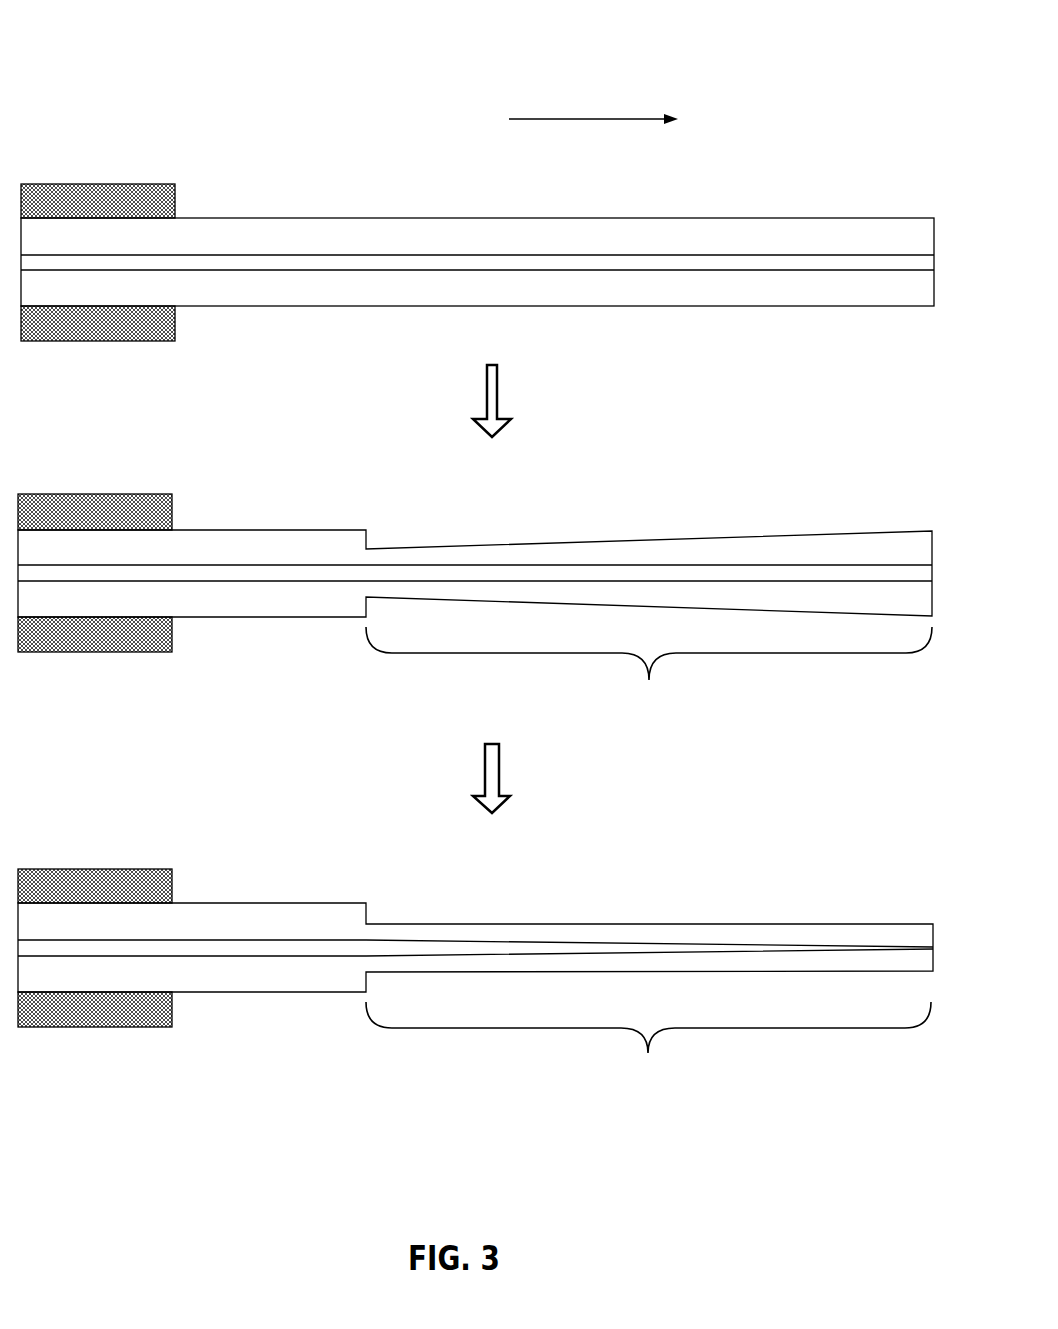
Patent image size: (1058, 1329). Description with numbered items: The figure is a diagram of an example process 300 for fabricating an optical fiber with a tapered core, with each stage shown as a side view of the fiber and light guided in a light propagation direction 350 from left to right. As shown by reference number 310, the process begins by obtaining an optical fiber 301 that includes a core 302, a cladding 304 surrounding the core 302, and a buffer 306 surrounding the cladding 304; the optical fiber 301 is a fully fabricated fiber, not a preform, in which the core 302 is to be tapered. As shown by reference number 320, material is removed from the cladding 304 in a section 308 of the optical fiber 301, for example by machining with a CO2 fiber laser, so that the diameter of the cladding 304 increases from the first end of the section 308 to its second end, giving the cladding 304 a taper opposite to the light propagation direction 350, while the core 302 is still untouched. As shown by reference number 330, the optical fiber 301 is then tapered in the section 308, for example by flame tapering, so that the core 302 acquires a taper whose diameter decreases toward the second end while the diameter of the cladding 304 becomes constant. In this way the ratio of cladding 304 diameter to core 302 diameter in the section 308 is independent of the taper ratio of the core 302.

The process 300 is at (138, 38).
The light propagation direction 350 is at (593, 118).
The obtaining step 310 is at (784, 184).
The cladding material removal step 320 is at (792, 492).
The fiber tapering step 330 is at (800, 891).
The optical fiber 301 is at (218, 323).
The core 302 is at (407, 260).
The cladding 304 is at (280, 228).
The buffer 306 is at (125, 195).
The section 308 is at (649, 857).